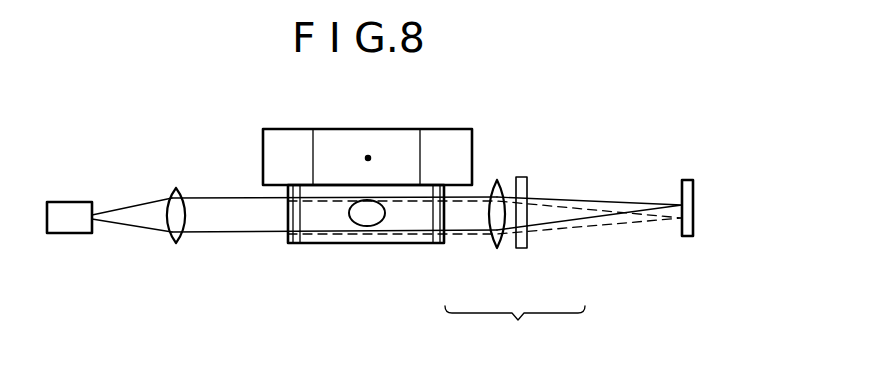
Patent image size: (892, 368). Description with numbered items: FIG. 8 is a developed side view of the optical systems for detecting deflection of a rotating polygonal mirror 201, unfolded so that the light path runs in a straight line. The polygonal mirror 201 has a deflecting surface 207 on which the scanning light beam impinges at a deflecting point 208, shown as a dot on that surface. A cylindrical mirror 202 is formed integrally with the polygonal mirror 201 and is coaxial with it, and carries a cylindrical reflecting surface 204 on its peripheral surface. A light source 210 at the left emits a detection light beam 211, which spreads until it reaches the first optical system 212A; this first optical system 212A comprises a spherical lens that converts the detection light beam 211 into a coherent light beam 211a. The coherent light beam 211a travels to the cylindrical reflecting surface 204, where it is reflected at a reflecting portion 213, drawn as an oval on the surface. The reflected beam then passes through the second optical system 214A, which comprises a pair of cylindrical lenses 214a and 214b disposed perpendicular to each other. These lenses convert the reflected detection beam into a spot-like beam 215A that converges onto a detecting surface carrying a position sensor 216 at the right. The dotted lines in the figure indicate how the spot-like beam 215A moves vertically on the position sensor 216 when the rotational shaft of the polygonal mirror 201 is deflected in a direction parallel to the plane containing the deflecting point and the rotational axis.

The rotating polygonal mirror 201 is at (460, 128).
The cylindrical mirror 202 is at (310, 245).
The cylindrical reflecting surface 204 is at (343, 236).
The deflecting surface 207 is at (327, 145).
The deflecting point 208 is at (368, 156).
The light source 210 is at (77, 234).
The detection light beam 211 is at (140, 230).
The coherent light beam 211a is at (240, 231).
The first optical system 212A is at (172, 243).
The reflecting portion 213 is at (367, 218).
The cylindrical lens 214a is at (497, 248).
The cylindrical lens 214b is at (523, 250).
The second optical system 214A is at (515, 329).
The spot-like beam 215A is at (682, 205).
The position sensor 216 is at (693, 180).